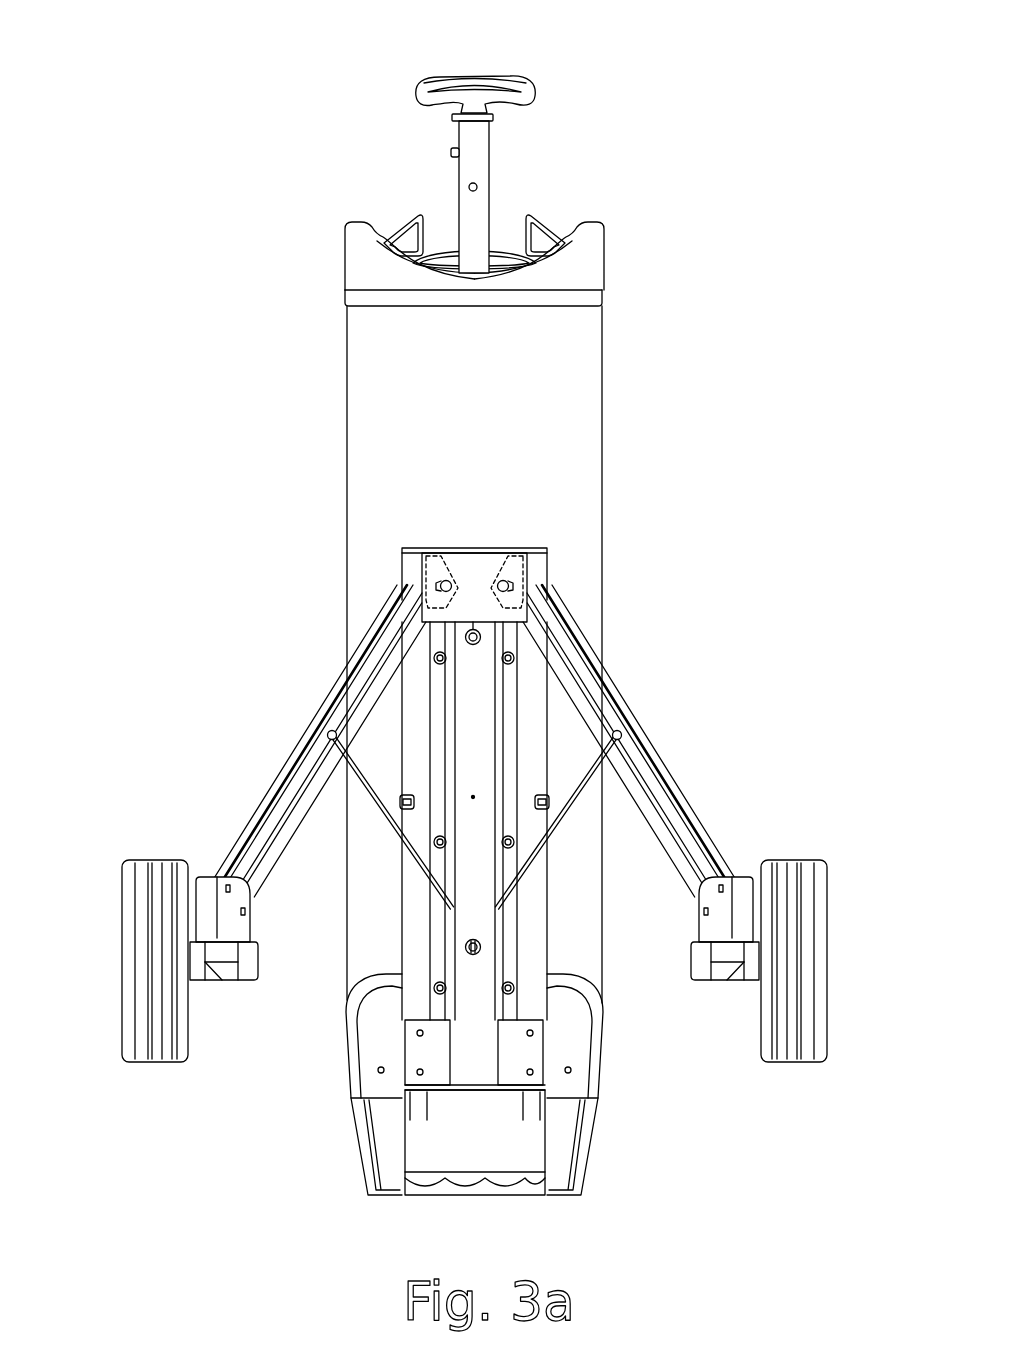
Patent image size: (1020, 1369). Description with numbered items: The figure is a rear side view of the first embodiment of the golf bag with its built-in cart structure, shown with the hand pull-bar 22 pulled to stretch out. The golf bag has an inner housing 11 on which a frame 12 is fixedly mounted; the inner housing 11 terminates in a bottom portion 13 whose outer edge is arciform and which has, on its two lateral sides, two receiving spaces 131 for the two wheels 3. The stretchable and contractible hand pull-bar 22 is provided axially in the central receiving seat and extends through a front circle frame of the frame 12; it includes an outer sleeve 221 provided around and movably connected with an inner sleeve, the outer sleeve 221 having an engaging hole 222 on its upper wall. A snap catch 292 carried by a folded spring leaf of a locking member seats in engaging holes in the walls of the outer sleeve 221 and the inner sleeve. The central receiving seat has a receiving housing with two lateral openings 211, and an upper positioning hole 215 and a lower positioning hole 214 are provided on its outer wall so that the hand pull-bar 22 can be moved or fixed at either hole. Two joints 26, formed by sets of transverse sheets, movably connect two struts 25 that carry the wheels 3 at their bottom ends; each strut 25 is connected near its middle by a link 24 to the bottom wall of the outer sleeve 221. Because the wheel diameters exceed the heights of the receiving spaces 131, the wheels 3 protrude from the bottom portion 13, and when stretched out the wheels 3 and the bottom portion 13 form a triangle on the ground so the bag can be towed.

The wheel 3 is at (130, 925).
The inner housing 11 is at (367, 406).
The frame 12 is at (357, 245).
The bottom portion 13 is at (525, 1084).
The receiving space 131 is at (578, 1050).
The hand pull-bar 22 is at (546, 67).
The outer sleeve 221 is at (482, 148).
The engaging hole 222 is at (482, 187).
The snap catch 292 is at (450, 152).
The joint 26 is at (420, 580).
The opening 211 is at (510, 722).
The lower positioning hole 214 is at (466, 947).
The upper positioning hole 215 is at (463, 638).
The link 24 is at (376, 806).
The strut 25 is at (292, 775).